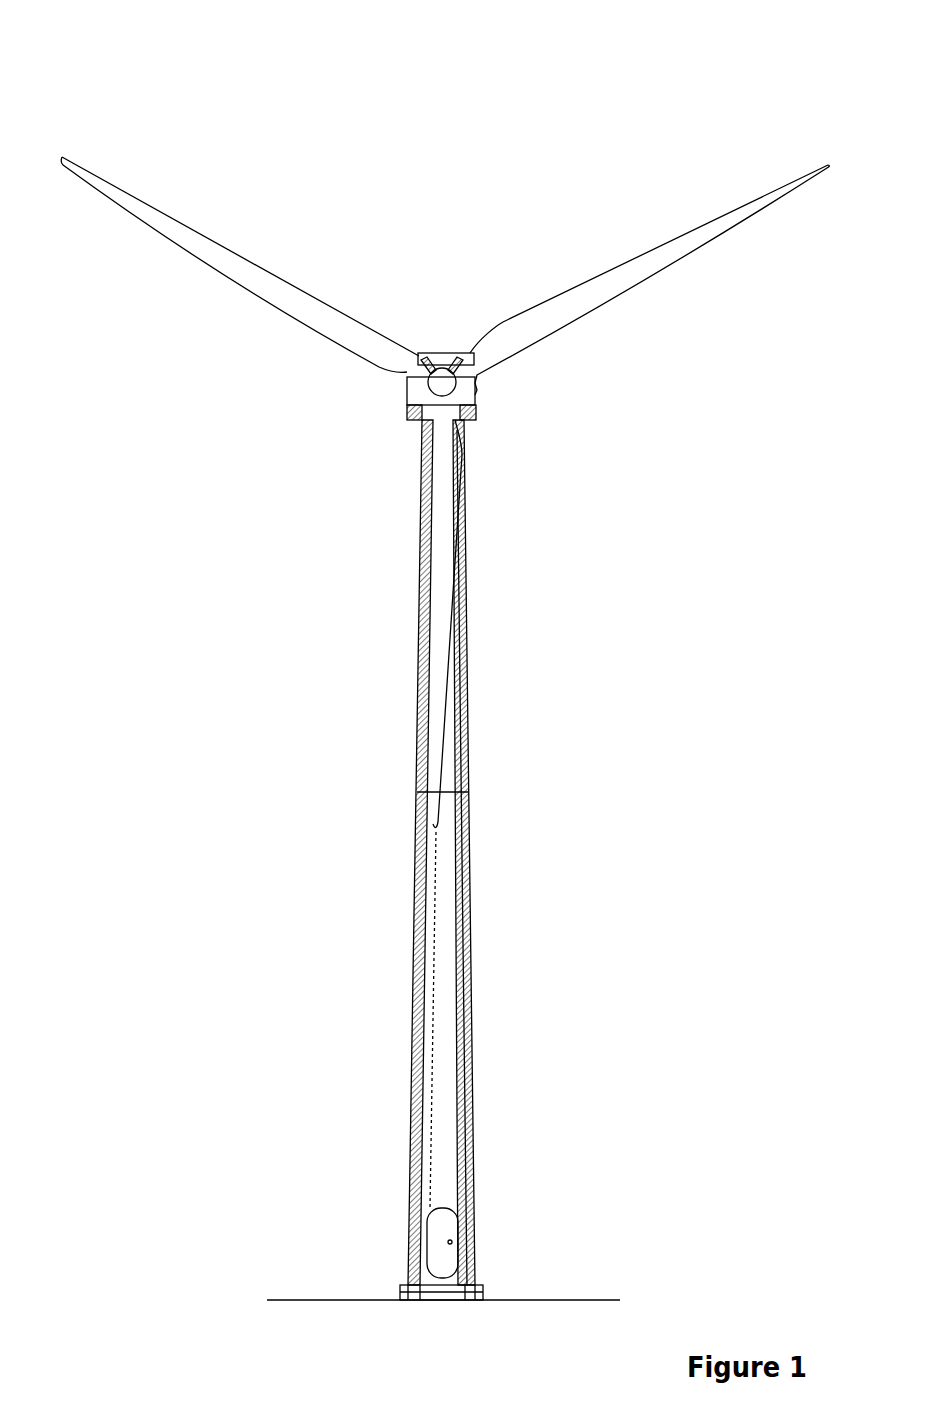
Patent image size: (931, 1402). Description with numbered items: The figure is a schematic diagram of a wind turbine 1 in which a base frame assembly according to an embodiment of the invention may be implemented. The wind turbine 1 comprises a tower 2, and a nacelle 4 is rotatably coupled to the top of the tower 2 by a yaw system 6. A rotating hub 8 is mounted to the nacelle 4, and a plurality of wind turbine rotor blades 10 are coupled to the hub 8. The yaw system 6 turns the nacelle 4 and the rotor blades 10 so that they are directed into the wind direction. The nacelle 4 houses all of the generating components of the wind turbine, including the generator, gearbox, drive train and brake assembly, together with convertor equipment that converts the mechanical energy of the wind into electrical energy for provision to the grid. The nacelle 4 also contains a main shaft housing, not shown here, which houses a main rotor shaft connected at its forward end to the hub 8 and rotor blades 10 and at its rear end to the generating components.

The wind turbine 1 is at (112, 96).
The tower 2 is at (457, 960).
The nacelle 4 is at (435, 353).
The yaw system 6 is at (477, 421).
The rotating hub 8 is at (438, 381).
The wind turbine rotor blades 10 is at (248, 280).